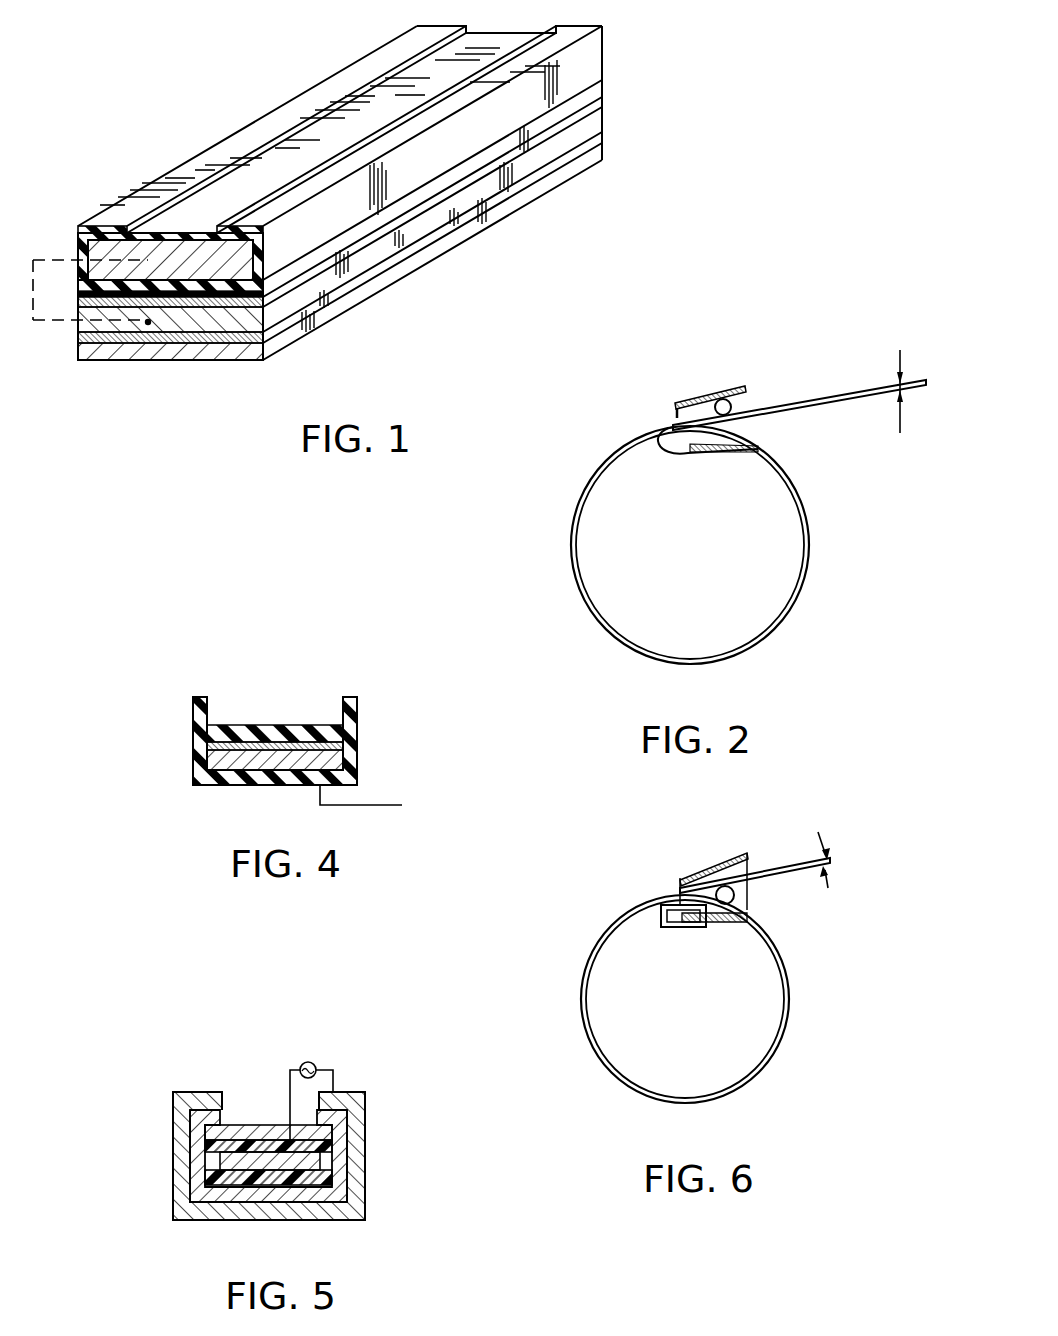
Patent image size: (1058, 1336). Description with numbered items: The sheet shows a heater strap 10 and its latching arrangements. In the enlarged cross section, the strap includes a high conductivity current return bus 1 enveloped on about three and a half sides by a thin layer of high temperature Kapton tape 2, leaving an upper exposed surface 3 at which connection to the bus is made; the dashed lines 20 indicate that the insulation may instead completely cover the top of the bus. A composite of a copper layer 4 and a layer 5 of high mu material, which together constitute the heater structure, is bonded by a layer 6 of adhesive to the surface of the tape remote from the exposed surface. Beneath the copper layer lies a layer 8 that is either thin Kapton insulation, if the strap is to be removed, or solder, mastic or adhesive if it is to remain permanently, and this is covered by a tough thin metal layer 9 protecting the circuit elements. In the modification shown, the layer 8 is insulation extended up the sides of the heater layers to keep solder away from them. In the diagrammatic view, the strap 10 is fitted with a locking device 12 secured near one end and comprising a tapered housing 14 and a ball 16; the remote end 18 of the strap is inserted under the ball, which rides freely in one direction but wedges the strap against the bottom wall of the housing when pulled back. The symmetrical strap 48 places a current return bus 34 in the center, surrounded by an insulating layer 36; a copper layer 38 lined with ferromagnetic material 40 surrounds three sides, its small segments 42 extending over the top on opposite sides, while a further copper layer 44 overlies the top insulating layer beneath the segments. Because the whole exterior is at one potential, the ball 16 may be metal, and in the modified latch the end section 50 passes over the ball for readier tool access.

In FIG. 1, the current return bus 1 is at (264, 245).
In FIG. 1, the Kapton tape 2 is at (78, 234).
In FIG. 1, the upper exposed surface 3 is at (328, 163).
In FIG. 1, the layer of low resistivity material 4 is at (247, 320).
In FIG. 4, the layer of low resistivity material 4 is at (356, 756).
In FIG. 1, the layer of high mu material 5 is at (200, 305).
In FIG. 4, the layer of high mu material 5 is at (247, 742).
In FIG. 1, the layer of adhesive 6 is at (80, 296).
In FIG. 1, the layer of material 8 is at (157, 340).
In FIG. 4, the layer of material 8 is at (357, 713).
In FIG. 1, the metal covering layer 9 is at (222, 353).
In FIG. 1, the heater strap 10 is at (498, 248).
In FIG. 2, the heater strap 10 is at (806, 504).
In FIG. 2, the locking device 12 is at (745, 374).
In FIG. 6, the locking device 12 is at (702, 853).
In FIG. 2, the tapered housing 14 is at (700, 400).
In FIG. 6, the tapered housing 14 is at (680, 880).
In FIG. 2, the ball 16 is at (727, 400).
In FIG. 6, the ball 16 is at (735, 897).
In FIG. 2, the end of the strap 18 is at (813, 400).
In FIG. 1, the dashed lines 20 is at (58, 318).
In FIG. 5, the current return bus 34 is at (293, 1167).
In FIG. 5, the insulating layer 36 is at (320, 1178).
In FIG. 5, the copper layer 38 is at (215, 1207).
In FIG. 5, the ferromagnetic material 40 is at (333, 1138).
In FIG. 5, the small segments 42 is at (195, 1092).
In FIG. 5, the further copper layer 44 is at (248, 1125).
In FIG. 5, the strap 48 is at (376, 1213).
In FIG. 6, the strap 48 is at (788, 972).
In FIG. 6, the end section 50 is at (796, 862).